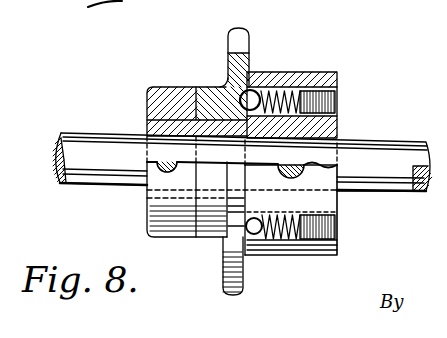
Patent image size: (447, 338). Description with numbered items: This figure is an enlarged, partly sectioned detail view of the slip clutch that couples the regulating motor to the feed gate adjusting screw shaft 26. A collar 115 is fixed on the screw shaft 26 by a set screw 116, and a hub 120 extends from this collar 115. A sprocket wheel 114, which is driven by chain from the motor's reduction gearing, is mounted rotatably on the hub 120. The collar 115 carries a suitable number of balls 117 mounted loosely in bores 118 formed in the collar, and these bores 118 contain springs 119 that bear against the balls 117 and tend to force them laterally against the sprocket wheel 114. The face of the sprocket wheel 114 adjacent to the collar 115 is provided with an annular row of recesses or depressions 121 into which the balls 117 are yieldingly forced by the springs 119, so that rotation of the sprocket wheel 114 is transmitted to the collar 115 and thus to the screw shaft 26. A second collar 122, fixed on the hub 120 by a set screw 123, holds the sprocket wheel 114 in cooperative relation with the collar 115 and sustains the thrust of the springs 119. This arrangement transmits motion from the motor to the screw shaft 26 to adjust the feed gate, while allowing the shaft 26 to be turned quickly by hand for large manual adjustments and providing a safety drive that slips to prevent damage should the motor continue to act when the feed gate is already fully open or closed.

The screw shaft 26 is at (76, 140).
The sprocket wheel 114 is at (250, 52).
The collar 115 is at (338, 128).
The set screw 116 is at (300, 170).
The balls 117 is at (259, 92).
The bores 118 is at (306, 86).
The springs 119 is at (296, 88).
The hub 120 is at (170, 120).
The recesses or depressions 121 is at (231, 88).
The collar 122 is at (177, 238).
The set screw 123 is at (168, 168).